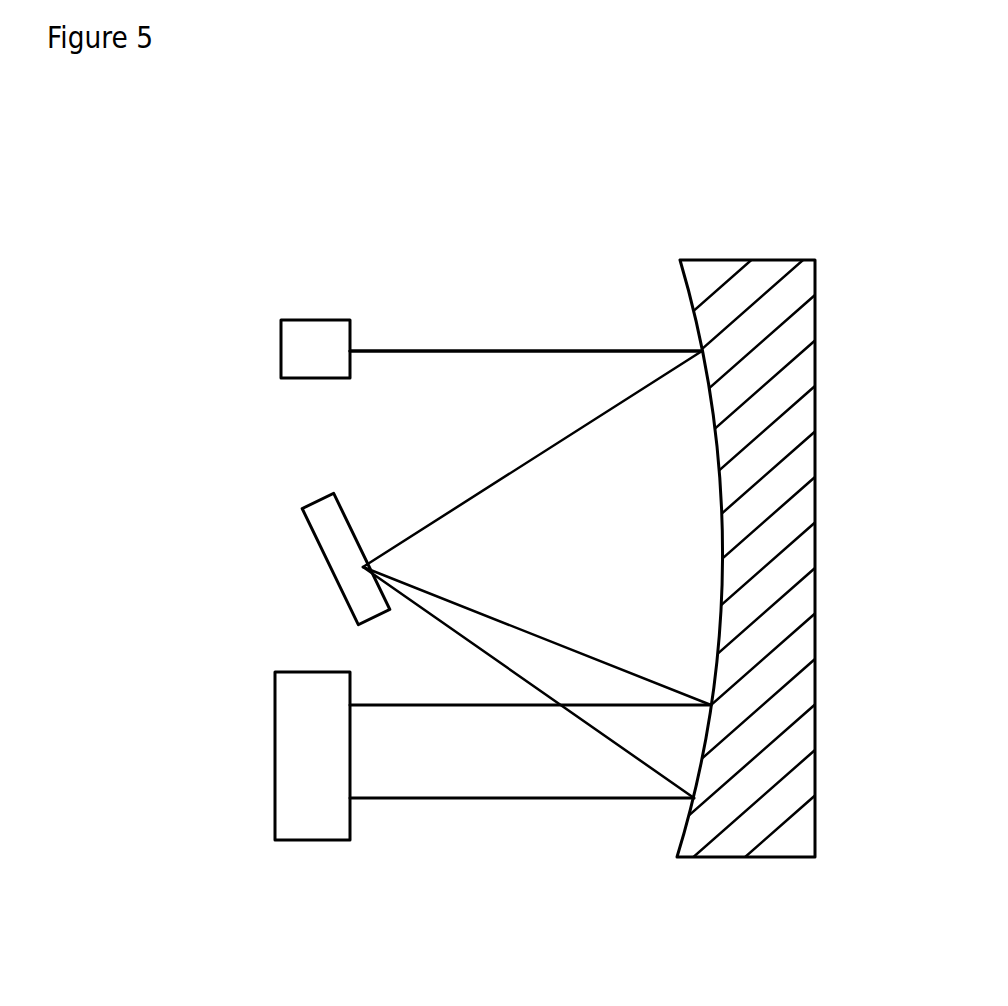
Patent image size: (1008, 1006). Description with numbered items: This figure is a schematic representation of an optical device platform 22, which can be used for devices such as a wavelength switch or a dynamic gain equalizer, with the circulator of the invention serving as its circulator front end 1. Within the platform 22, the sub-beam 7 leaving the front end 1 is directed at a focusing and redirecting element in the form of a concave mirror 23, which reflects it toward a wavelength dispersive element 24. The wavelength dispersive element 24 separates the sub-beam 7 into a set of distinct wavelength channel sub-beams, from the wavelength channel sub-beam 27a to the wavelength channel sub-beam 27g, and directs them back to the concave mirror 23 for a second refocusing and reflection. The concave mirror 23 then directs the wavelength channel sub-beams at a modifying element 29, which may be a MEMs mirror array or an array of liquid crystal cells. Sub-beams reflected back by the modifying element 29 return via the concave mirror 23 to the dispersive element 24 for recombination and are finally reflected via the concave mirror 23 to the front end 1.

The optical device platform 22 is at (480, 156).
The circulator front end 1 is at (322, 320).
The sub-beam 7 is at (488, 340).
The concave mirror 23 is at (815, 517).
The wavelength dispersive element 24 is at (343, 520).
The wavelength channel sub-beam 27a is at (535, 628).
The modifying element 29 is at (452, 756).
The wavelength channel sub-beam 27g is at (437, 798).